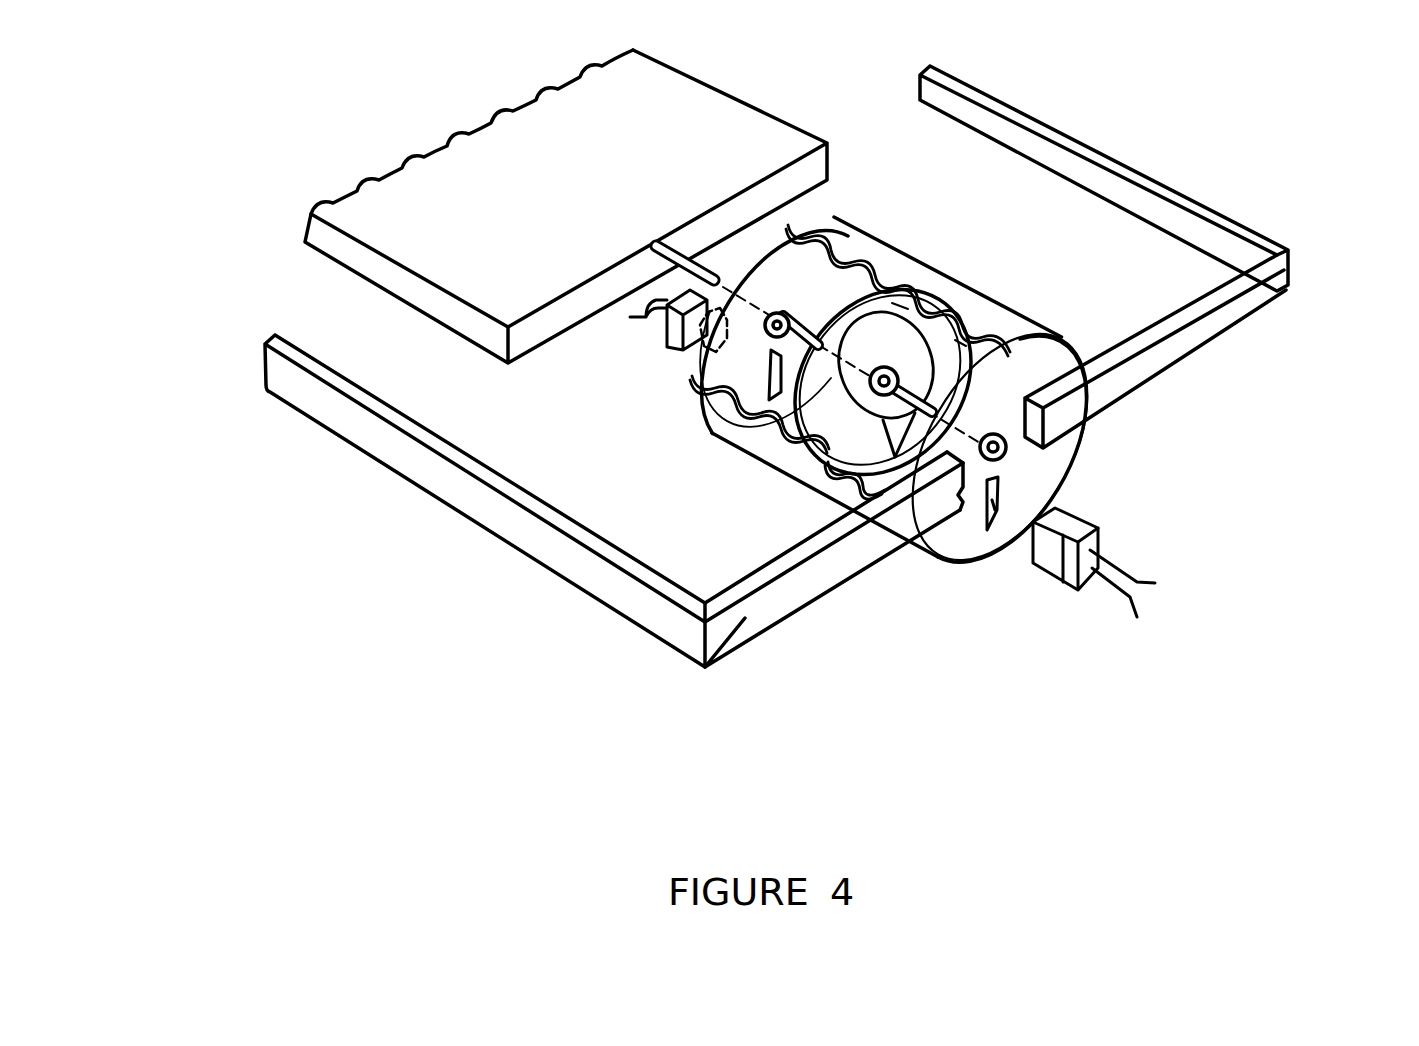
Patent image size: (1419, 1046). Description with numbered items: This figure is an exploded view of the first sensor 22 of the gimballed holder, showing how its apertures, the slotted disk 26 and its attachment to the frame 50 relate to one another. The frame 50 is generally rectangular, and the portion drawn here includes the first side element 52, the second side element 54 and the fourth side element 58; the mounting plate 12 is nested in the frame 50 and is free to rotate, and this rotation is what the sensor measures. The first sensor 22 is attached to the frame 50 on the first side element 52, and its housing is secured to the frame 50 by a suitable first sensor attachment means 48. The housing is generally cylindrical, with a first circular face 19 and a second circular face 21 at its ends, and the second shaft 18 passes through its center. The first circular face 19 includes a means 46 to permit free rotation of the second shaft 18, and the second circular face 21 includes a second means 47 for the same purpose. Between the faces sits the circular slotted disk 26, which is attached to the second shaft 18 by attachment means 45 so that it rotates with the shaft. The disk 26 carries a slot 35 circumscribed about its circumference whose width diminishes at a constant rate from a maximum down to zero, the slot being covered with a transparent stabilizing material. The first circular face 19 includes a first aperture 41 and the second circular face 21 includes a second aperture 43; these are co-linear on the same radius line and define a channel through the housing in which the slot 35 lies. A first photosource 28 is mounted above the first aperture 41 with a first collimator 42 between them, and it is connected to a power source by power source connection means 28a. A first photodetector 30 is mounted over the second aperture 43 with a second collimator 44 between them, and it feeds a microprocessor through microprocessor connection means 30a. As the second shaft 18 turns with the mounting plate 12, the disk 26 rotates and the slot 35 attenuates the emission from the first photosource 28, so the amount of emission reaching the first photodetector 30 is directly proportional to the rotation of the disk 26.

The mounting plate 12 is at (391, 290).
The second shaft 18 is at (802, 327).
The first circular face 19 is at (745, 245).
The second circular face 21 is at (1054, 356).
The first sensor 22 is at (917, 263).
The slotted disk 26 is at (846, 414).
The first photosource 28 is at (667, 330).
The power source connection means 28a is at (638, 307).
The first photodetector 30 is at (1119, 514).
The microprocessor connection means 30a is at (1143, 583).
The slot 35 is at (960, 343).
The first aperture 41 is at (739, 416).
The first collimator 42 is at (680, 356).
The second aperture 43 is at (1000, 527).
The second collimator 44 is at (1071, 520).
The attachment means 45 is at (888, 368).
The means to permit free rotation 46 is at (777, 311).
The second means to permit free rotation 47 is at (995, 432).
The first sensor attachment means 48 is at (1037, 388).
The frame 50 is at (1191, 348).
The first side element 52 is at (822, 584).
The second side element 54 is at (1093, 150).
The fourth side element 58 is at (458, 503).